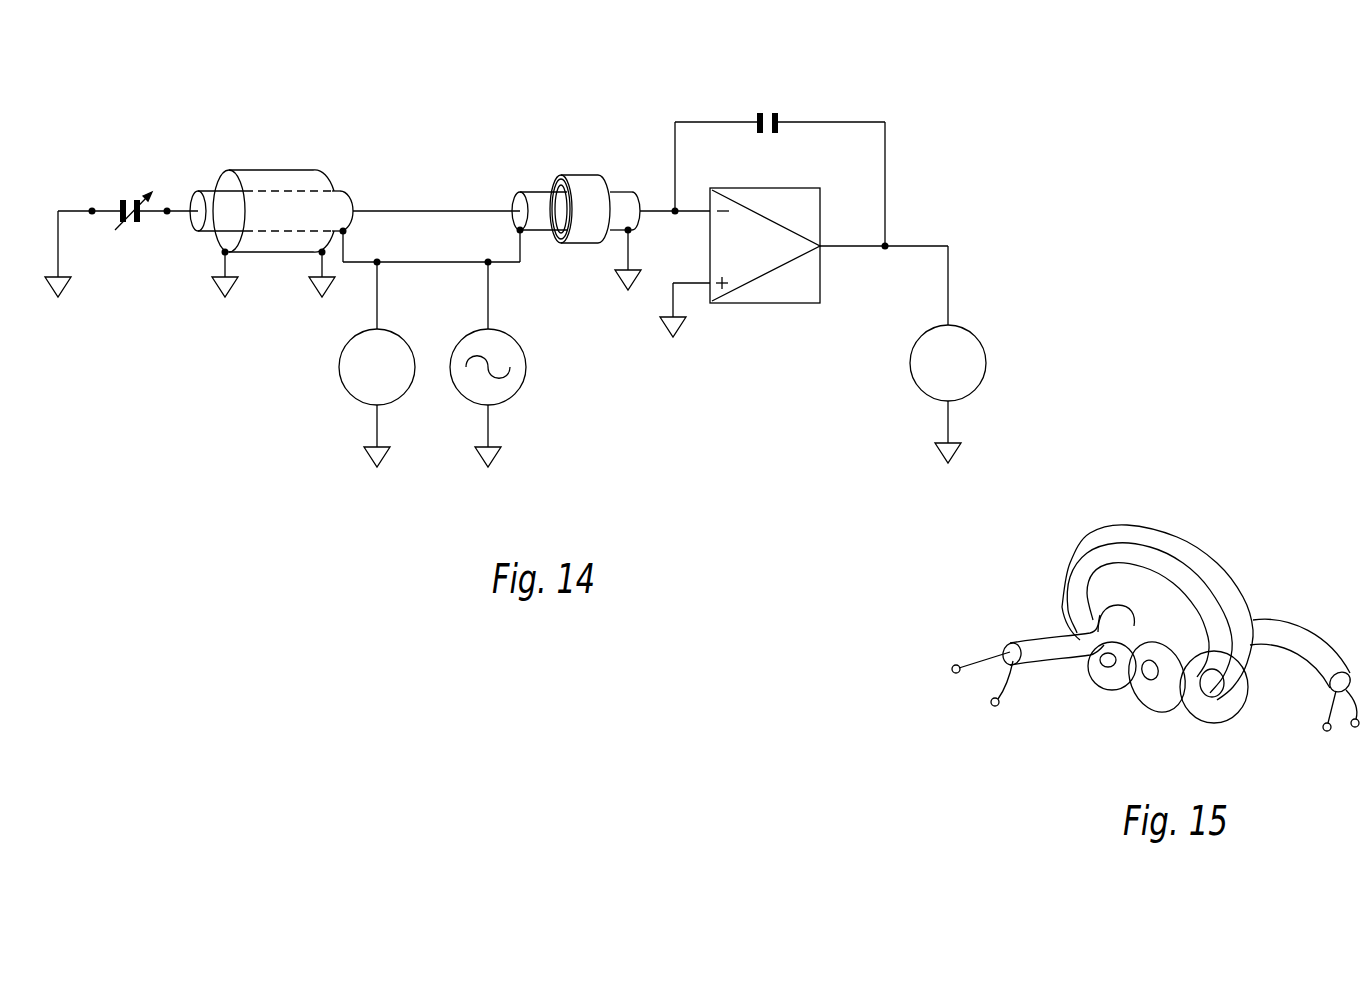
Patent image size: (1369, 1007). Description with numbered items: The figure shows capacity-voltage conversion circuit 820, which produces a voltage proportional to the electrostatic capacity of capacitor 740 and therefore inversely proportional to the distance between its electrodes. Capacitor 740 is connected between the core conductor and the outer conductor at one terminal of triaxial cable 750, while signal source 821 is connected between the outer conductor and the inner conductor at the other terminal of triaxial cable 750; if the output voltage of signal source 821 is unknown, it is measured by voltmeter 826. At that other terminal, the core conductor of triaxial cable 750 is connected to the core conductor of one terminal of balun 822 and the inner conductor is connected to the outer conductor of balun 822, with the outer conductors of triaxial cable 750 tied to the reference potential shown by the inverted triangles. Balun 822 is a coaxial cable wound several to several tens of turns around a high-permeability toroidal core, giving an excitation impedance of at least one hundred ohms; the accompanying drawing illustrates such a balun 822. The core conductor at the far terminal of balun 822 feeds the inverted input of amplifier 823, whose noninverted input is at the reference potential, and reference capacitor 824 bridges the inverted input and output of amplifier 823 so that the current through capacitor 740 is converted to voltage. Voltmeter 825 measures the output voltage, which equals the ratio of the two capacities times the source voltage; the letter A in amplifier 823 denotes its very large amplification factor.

In FIG. 14, the capacity-voltage conversion circuit 820 is at (200, 79).
In FIG. 14, the capacitor 740 is at (127, 200).
In FIG. 14, the triaxial cable 750 is at (280, 170).
In FIG. 14, the balun 822 is at (578, 175).
In FIG. 15, the balun 822 is at (1242, 513).
In FIG. 14, the amplifier 823 is at (767, 303).
In FIG. 14, the reference capacitor 824 is at (777, 112).
In FIG. 14, the voltmeter 825 is at (986, 365).
In FIG. 14, the voltmeter 826 is at (339, 372).
In FIG. 14, the signal source 821 is at (526, 372).